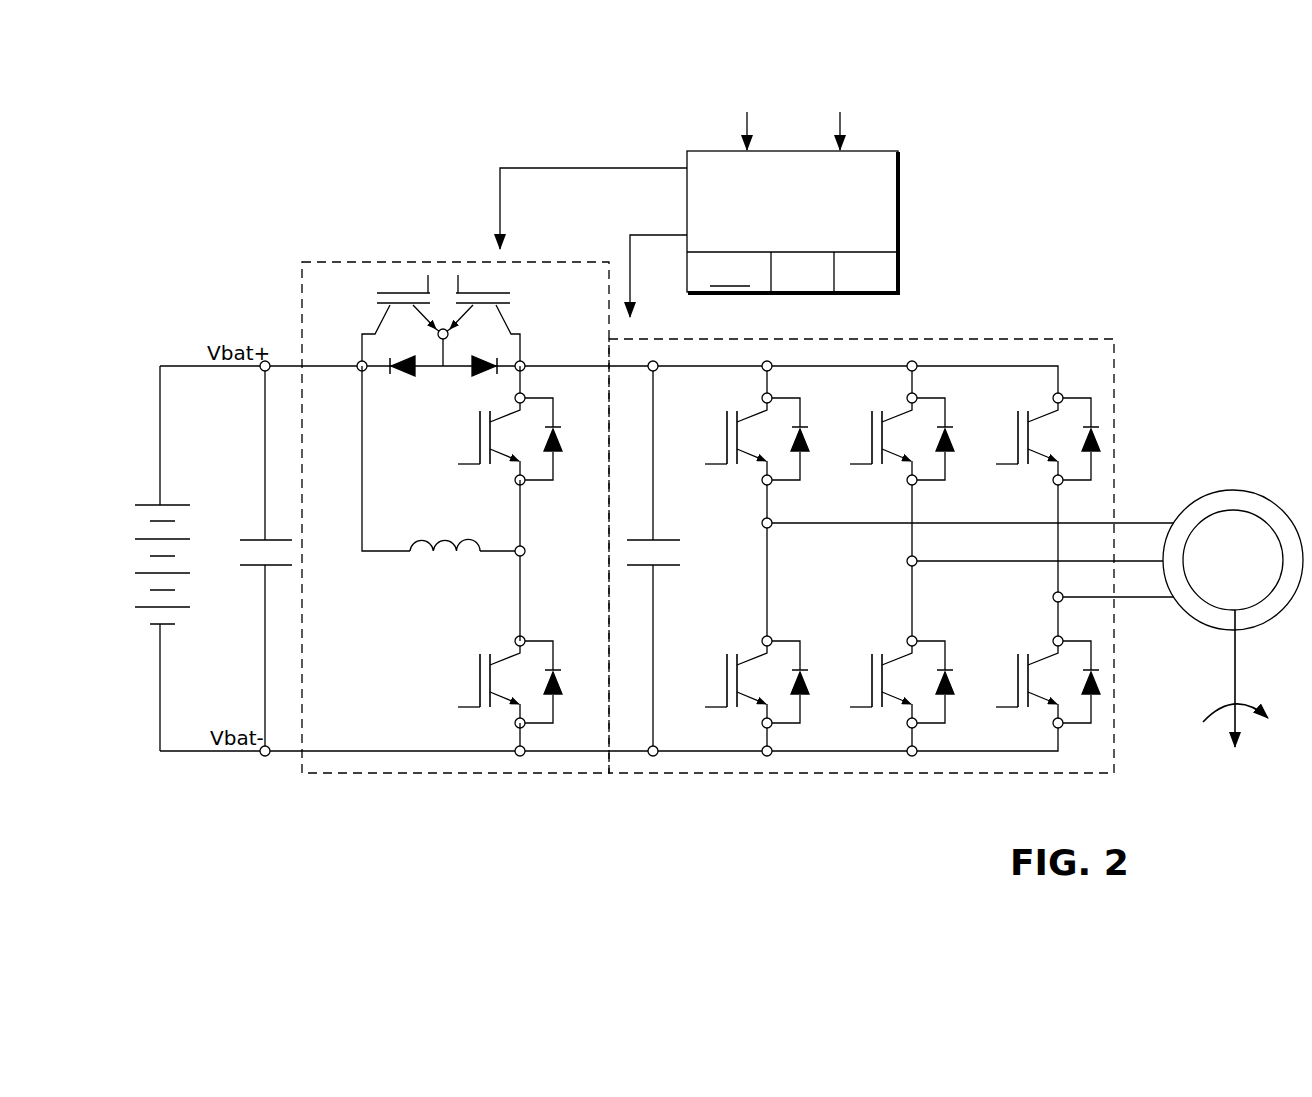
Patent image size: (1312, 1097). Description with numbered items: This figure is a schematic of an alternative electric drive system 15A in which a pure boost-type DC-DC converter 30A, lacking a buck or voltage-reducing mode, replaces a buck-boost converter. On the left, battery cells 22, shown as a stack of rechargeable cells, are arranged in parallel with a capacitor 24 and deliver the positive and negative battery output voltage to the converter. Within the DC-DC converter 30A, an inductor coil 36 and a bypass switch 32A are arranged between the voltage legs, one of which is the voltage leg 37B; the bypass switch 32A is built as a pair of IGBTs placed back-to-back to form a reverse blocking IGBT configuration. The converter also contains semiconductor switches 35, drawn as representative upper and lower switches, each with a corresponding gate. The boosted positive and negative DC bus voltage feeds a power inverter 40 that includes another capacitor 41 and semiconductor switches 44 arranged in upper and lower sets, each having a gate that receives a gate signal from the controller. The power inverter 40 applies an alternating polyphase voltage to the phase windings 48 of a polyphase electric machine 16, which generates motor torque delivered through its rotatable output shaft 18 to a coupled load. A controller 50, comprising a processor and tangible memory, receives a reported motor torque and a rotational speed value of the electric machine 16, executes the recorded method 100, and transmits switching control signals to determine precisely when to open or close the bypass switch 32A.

The electric drive system 15A is at (326, 100).
The battery cells 22 is at (175, 503).
The capacitor 24 is at (256, 538).
The DC-DC converter 30A is at (433, 773).
The bypass switch 32A is at (533, 265).
The semiconductor switches 35 is at (539, 494).
The inductor coil 36 is at (443, 535).
The voltage leg 37B is at (522, 613).
The power inverter 40 is at (803, 773).
The capacitor 41 is at (665, 540).
The semiconductor switches 44 is at (904, 390).
The phase windings 48 is at (1135, 523).
The electric machine 16 is at (1250, 575).
The output shaft 18 is at (1235, 682).
The controller 50 is at (723, 201).
The method 100 is at (732, 273).